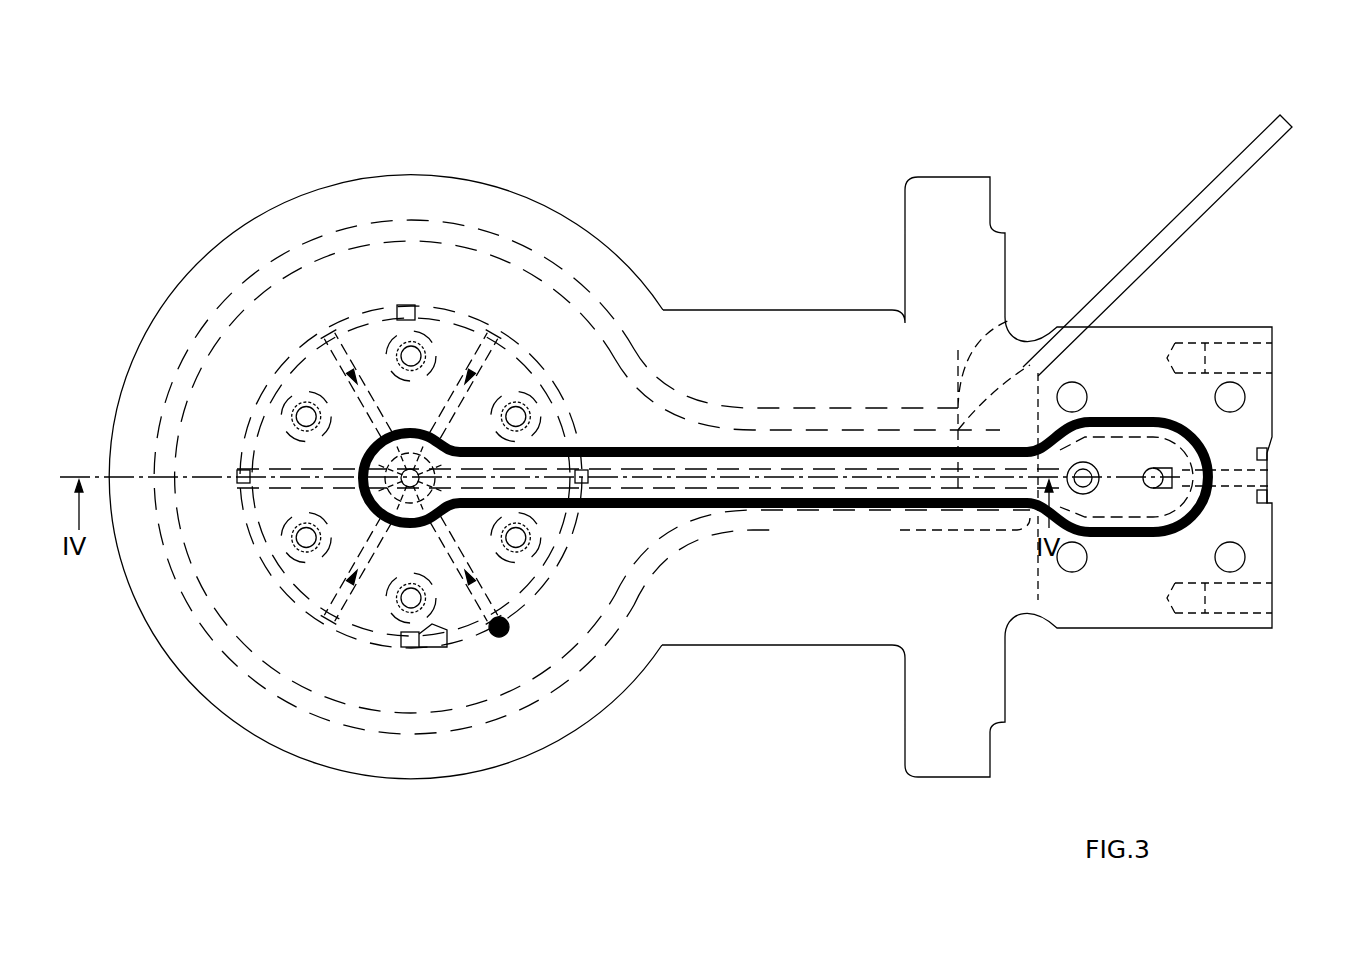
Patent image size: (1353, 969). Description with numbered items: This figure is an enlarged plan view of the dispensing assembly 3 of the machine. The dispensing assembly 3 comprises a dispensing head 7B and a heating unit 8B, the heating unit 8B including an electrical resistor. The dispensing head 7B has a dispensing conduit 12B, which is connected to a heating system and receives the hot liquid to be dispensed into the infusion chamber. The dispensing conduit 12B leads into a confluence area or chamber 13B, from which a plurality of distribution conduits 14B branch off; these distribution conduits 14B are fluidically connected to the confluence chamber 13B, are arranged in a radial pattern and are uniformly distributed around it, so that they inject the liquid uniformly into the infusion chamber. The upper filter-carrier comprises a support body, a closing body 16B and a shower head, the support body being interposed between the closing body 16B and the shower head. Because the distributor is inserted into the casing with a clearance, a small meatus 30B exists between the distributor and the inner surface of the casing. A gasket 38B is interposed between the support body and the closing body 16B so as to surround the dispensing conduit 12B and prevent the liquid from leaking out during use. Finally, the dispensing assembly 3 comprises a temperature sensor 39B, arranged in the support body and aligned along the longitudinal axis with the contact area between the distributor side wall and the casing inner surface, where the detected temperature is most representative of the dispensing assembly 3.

The dispensing assembly 3 is at (640, 190).
The dispensing head 7B is at (356, 163).
The heating unit 8B is at (1215, 205).
The dispensing conduit 12B is at (747, 518).
The confluence area or chamber 13B is at (410, 451).
The distribution conduits 14B is at (462, 368).
The closing body 16B is at (598, 263).
The meatus 30B is at (330, 570).
The gasket 38B is at (697, 406).
The temperature sensor 39B is at (503, 632).